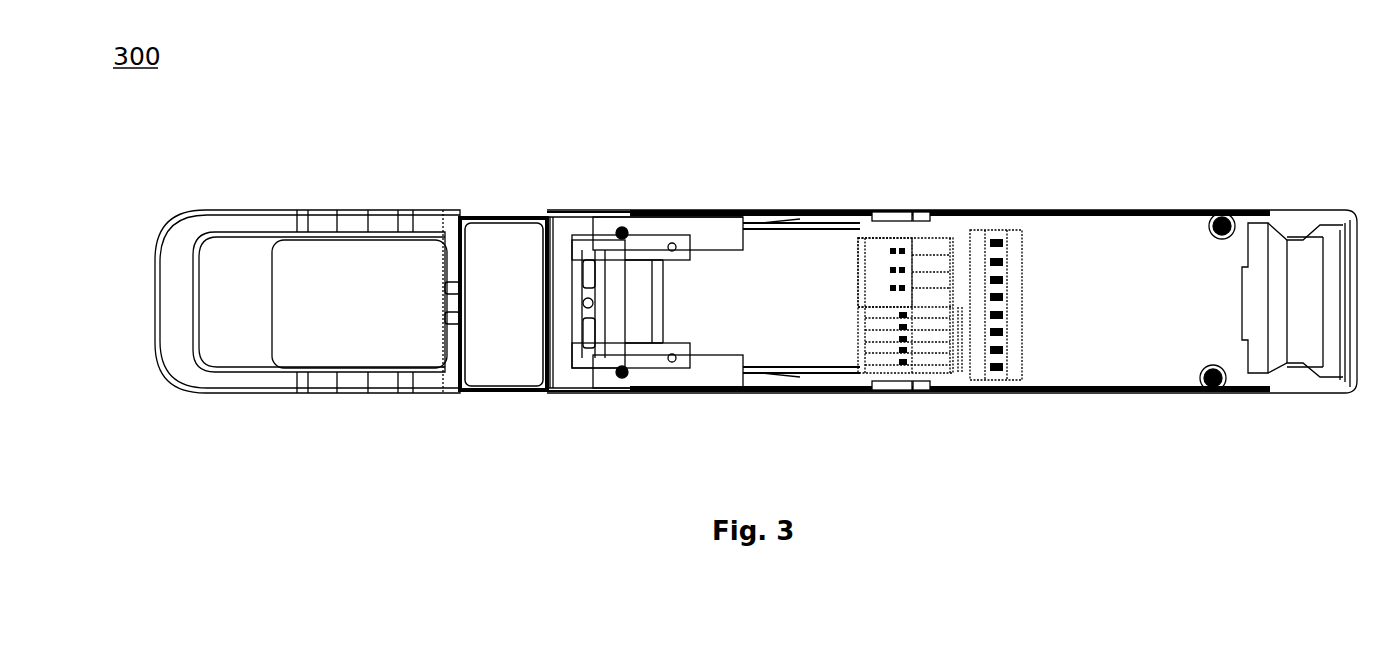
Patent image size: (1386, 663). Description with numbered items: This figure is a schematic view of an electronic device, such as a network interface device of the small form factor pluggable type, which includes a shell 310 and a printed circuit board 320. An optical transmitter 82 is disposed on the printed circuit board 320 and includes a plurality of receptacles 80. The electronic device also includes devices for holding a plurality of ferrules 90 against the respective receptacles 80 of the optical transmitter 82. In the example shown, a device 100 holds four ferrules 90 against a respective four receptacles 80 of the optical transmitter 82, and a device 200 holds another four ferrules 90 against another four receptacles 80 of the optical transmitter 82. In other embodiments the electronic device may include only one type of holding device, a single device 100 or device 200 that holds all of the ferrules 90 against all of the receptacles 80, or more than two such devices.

The shell 310 is at (713, 210).
The printed circuit board 320 is at (1137, 345).
The device 200 is at (873, 367).
The device 100 is at (890, 245).
The ferrules 90 is at (872, 230).
The receptacles 80 is at (958, 380).
The optical transmitter 82 is at (1012, 268).